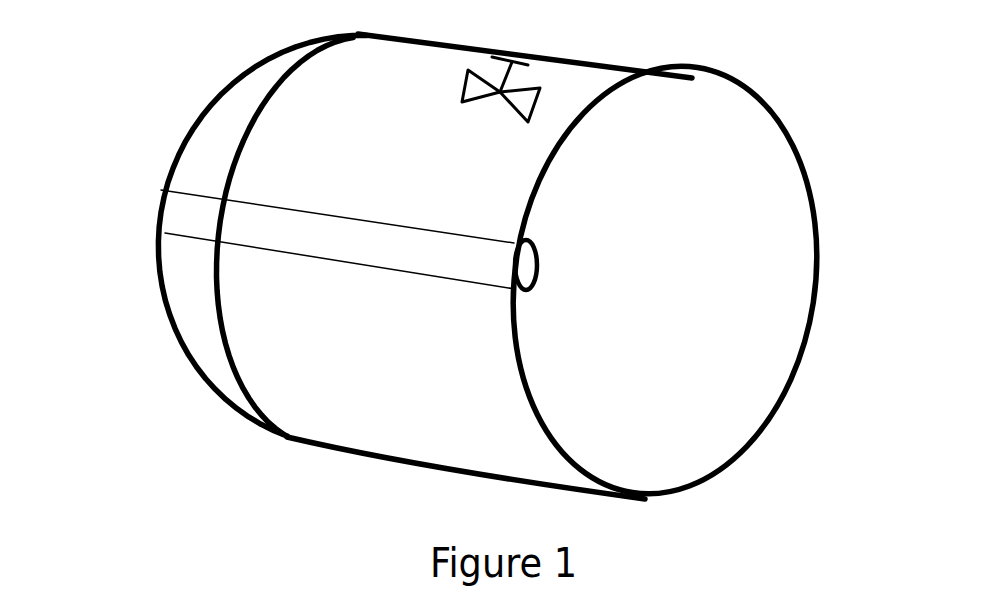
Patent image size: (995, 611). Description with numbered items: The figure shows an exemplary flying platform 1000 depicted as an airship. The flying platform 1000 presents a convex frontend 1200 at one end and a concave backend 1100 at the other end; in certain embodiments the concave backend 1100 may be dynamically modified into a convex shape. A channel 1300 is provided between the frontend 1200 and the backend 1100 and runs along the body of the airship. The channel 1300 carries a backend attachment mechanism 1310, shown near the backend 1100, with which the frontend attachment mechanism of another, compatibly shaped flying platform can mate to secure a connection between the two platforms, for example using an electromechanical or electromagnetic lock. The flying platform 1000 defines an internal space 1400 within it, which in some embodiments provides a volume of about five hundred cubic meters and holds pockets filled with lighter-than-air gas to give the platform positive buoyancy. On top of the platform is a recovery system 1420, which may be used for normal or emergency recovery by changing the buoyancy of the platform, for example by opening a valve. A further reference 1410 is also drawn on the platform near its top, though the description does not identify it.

The flying platform 1000 is at (420, 151).
The concave backend 1100 is at (735, 282).
The convex frontend 1200 is at (212, 358).
The channel 1300 is at (377, 257).
The backend attachment mechanism 1310 is at (537, 265).
The internal space 1400 is at (369, 371).
The top edge 1410 is at (363, 83).
The recovery system 1420 is at (537, 107).